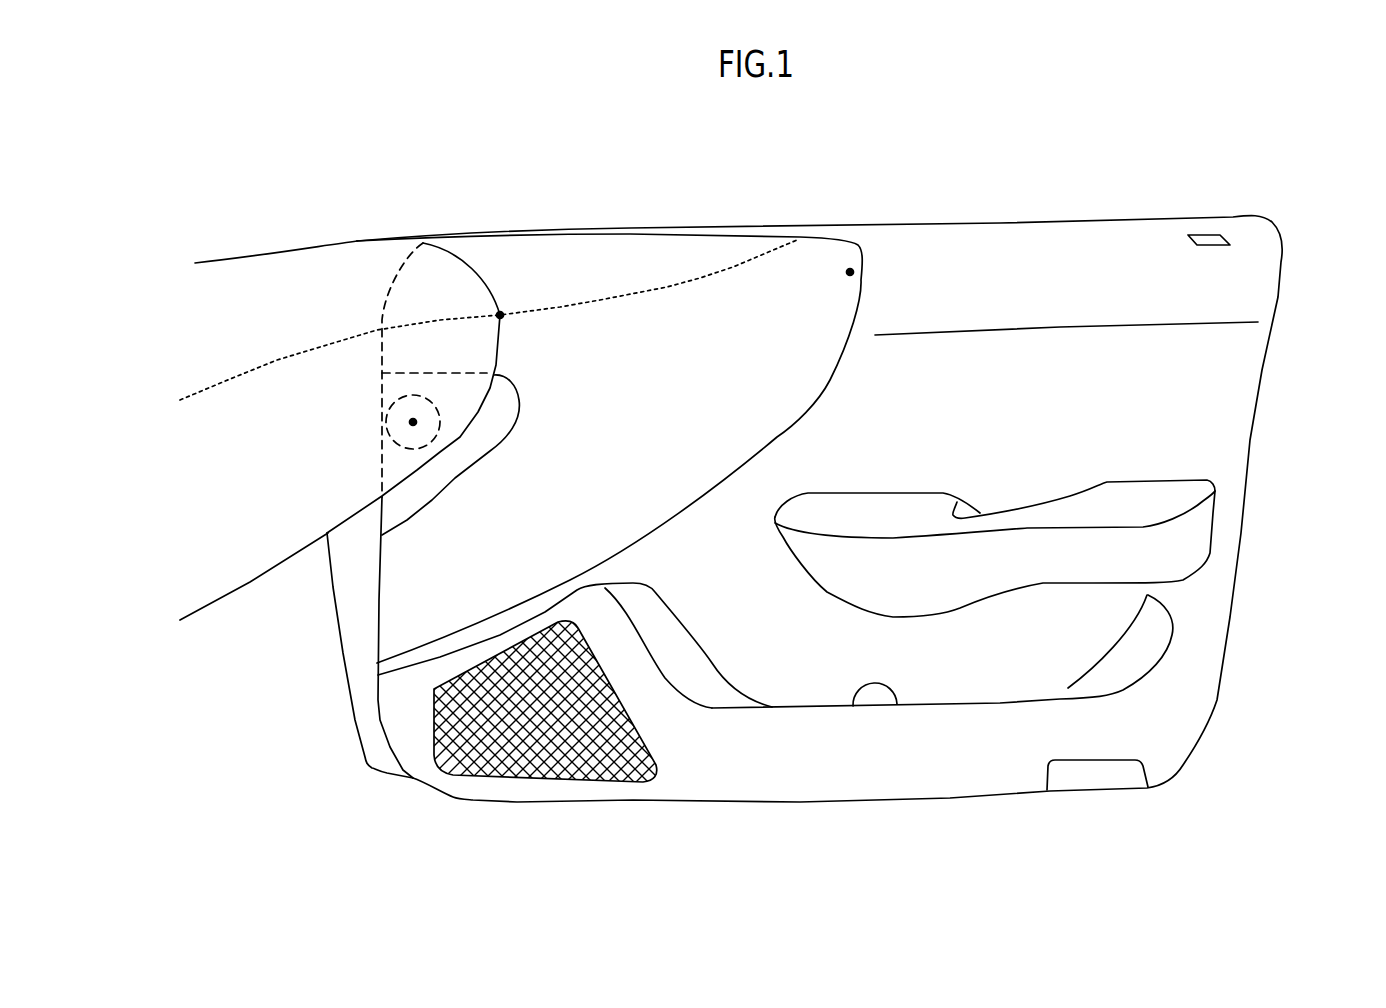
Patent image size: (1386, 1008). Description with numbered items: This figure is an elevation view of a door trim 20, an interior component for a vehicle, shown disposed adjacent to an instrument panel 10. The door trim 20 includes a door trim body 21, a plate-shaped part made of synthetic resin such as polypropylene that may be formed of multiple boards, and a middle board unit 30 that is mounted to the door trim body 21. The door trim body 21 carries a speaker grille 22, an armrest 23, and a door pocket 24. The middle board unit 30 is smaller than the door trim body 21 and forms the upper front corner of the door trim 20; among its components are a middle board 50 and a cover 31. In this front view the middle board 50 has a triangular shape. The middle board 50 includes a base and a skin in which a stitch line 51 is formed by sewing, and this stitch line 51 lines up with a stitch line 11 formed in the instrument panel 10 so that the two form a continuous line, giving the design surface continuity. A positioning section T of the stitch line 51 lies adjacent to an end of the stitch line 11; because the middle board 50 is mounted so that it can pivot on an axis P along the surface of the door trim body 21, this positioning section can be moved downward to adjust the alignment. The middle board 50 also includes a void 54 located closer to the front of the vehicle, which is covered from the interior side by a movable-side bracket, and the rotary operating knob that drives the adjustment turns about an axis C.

The instrument panel 10 is at (230, 297).
The stitch line 11 is at (277, 357).
The door trim 20 is at (1147, 199).
The door trim body 21 is at (1227, 407).
The speaker grille 22 is at (550, 755).
The armrest 23 is at (1177, 543).
The door pocket 24 is at (897, 704).
The middle board unit 30 is at (677, 266).
The cover 31 is at (427, 483).
The middle board 50 is at (753, 310).
The stitch line 51 is at (563, 307).
The void 54 is at (407, 520).